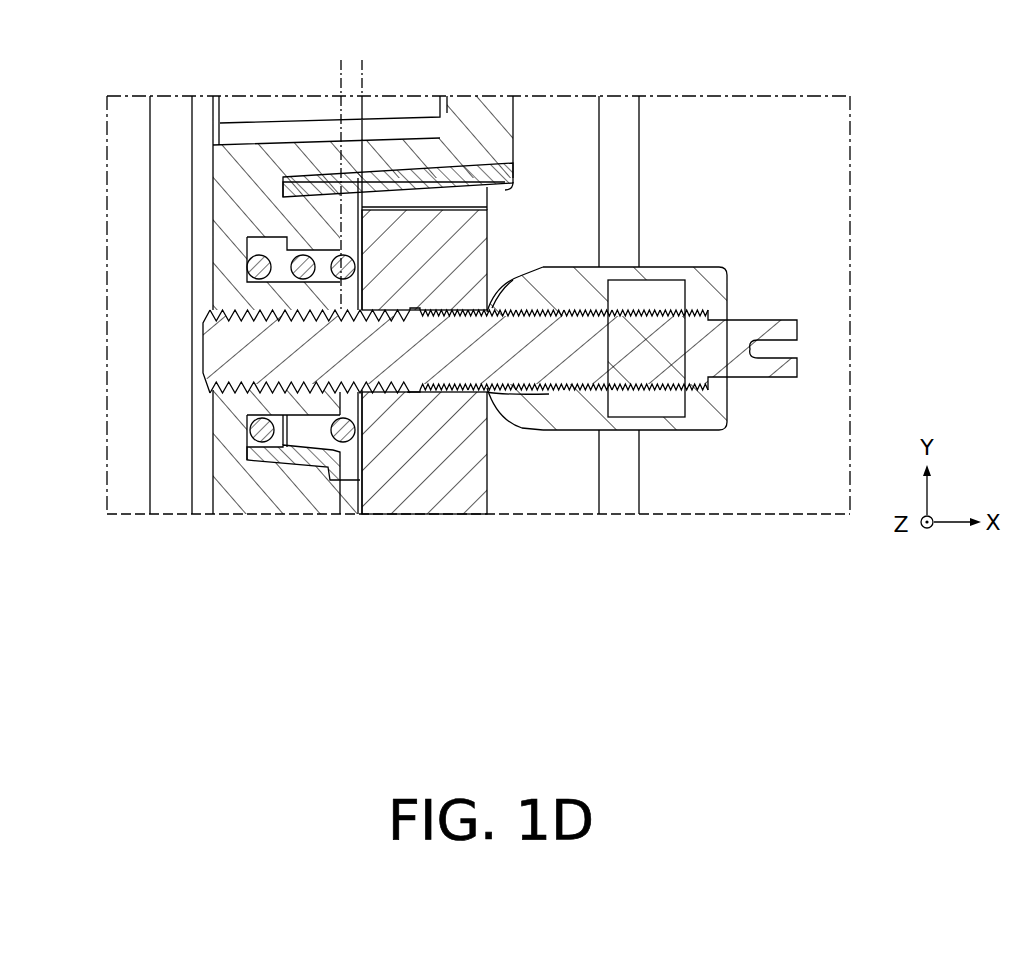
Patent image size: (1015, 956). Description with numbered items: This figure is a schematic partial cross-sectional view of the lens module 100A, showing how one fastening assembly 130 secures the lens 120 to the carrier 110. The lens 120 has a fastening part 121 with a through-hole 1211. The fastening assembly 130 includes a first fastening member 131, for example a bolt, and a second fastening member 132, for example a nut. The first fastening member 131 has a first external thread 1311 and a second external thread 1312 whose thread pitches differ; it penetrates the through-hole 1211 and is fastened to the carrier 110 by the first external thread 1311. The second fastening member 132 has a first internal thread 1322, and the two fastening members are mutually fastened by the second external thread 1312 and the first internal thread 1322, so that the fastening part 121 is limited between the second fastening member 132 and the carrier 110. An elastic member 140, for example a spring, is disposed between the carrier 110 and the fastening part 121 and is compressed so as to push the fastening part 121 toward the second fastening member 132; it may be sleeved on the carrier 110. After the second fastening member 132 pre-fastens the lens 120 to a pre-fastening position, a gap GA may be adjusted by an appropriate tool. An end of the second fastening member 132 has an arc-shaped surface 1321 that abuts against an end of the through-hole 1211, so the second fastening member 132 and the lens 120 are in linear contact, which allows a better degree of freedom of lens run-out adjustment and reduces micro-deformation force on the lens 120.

The carrier 110 is at (255, 157).
The elastic member 140 is at (341, 254).
The gap GA is at (313, 72).
The lens 120 is at (444, 273).
The fastening part 121 is at (444, 273).
The through-hole 1211 is at (485, 300).
The fastening assembly 130 is at (668, 652).
The first fastening member 131 is at (282, 594).
The first external thread 1311 is at (244, 394).
The second external thread 1312 is at (549, 394).
The second fastening member 132 is at (630, 339).
The arc-shaped surface 1321 is at (509, 274).
The first internal thread 1322 is at (716, 316).
The lens module 100A is at (974, 648).